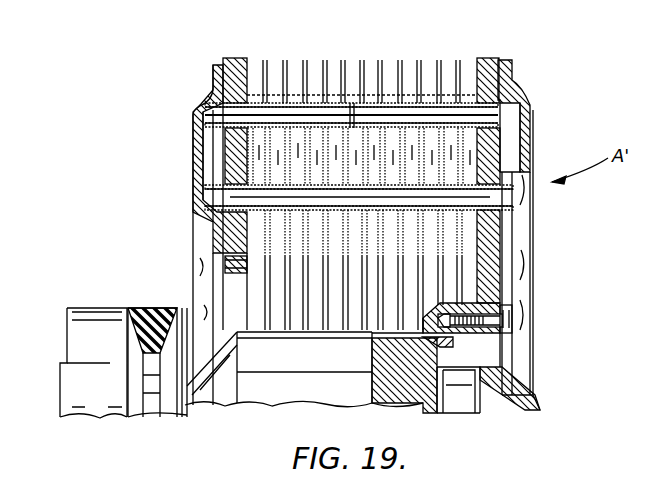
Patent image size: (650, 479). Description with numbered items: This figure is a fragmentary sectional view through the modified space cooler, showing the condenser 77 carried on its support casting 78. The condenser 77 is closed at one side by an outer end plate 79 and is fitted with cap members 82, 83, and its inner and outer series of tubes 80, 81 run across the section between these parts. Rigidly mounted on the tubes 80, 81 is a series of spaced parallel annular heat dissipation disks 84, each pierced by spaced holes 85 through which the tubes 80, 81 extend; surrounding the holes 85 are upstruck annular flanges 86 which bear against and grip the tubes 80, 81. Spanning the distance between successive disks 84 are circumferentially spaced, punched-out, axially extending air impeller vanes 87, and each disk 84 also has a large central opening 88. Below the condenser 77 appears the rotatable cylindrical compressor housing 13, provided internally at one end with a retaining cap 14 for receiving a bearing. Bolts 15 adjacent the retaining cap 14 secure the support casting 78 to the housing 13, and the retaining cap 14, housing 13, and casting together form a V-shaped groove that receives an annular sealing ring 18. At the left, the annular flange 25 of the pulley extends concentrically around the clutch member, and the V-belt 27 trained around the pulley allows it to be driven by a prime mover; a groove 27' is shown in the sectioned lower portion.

The compressor housing 13 is at (270, 398).
The retaining cap 14 is at (518, 392).
The bolts 15 is at (514, 322).
The annular sealing ring 18 is at (505, 350).
The annular flange 25 is at (68, 318).
The V-belt 27 is at (143, 346).
The groove 27' is at (439, 405).
The condenser 77 is at (445, 54).
The support casting 78 is at (493, 280).
The outer end plate 79 is at (230, 60).
The inner series of tubes 80 is at (480, 198).
The outer series of tubes 81 is at (232, 117).
The cap member 82 is at (194, 146).
The cap member 83 is at (533, 128).
The heat dissipation disks 84 is at (368, 98).
The holes 85 is at (300, 108).
The upstruck annular flanges 86 is at (283, 105).
The air impeller vanes 87 is at (353, 100).
The central opening 88 is at (267, 256).